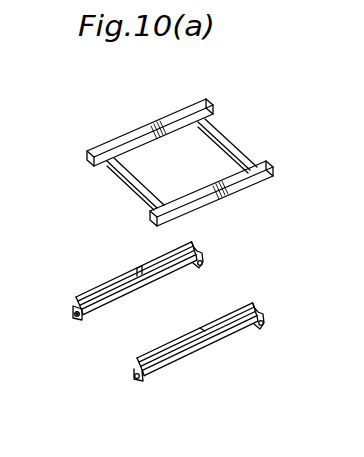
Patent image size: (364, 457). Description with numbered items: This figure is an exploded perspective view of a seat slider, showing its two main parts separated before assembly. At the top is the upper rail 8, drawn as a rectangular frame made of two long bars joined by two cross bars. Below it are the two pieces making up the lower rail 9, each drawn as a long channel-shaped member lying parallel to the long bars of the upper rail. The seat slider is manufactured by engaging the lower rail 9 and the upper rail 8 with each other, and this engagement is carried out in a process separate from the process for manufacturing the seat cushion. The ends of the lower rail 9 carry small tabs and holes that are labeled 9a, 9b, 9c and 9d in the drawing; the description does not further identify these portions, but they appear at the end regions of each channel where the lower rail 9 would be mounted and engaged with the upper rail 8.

The upper rail 8 is at (270, 177).
The lower rail 9 is at (78, 322).
The mounting hole 9a is at (203, 264).
The mounting hole 9b is at (70, 313).
The end tab 9c is at (72, 320).
The end tab 9d is at (202, 256).